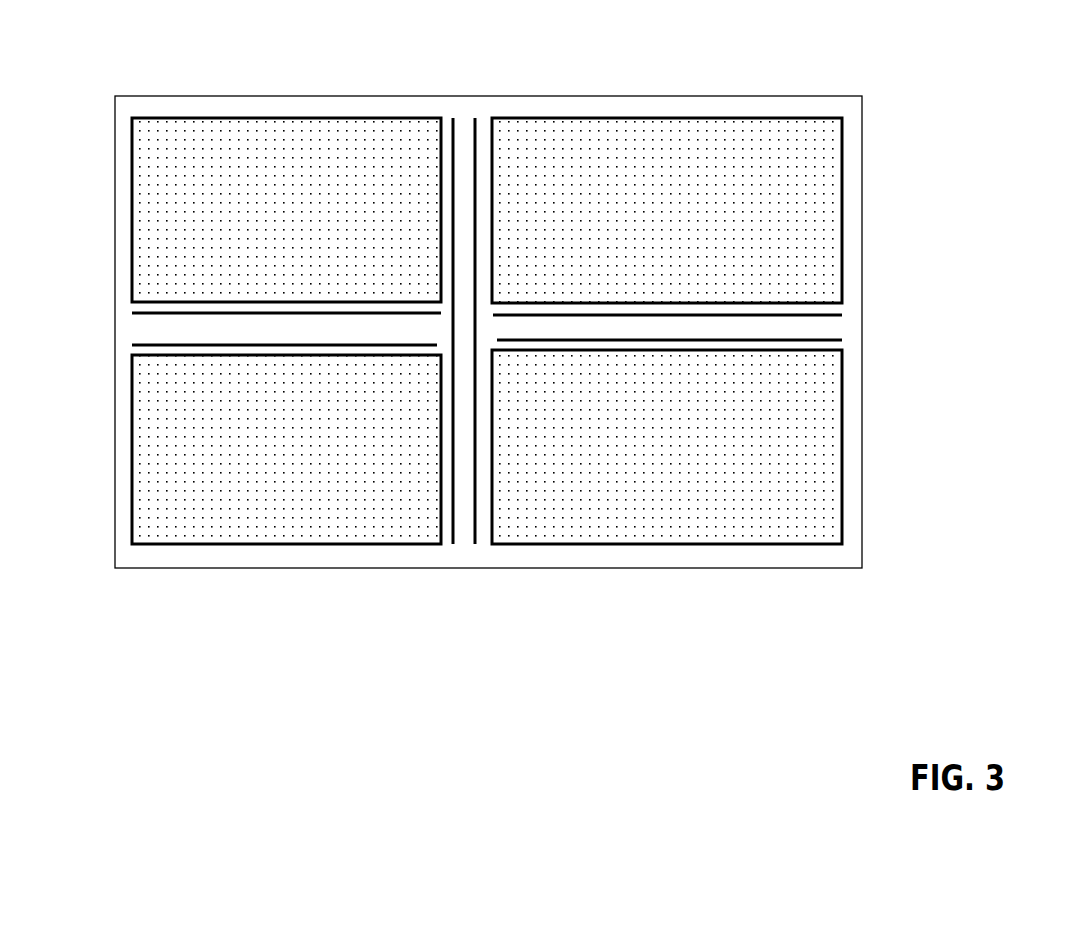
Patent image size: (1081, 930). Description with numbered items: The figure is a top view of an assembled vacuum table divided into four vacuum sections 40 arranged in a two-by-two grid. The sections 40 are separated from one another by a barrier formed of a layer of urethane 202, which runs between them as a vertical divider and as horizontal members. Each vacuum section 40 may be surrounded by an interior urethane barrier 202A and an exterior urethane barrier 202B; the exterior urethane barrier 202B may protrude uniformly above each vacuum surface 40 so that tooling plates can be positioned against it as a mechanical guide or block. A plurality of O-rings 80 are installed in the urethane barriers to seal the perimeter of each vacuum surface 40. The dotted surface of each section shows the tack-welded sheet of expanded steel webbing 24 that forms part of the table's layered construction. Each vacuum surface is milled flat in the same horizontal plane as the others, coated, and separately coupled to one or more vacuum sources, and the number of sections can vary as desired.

The tack-welded sheet of expanded steel webbing 24 is at (283, 233).
The vacuum section 40 is at (793, 530).
The O-ring 80 is at (172, 311).
The layer of urethane 202 is at (482, 118).
The interior urethane barrier 202A is at (813, 325).
The exterior urethane barrier 202B is at (313, 568).